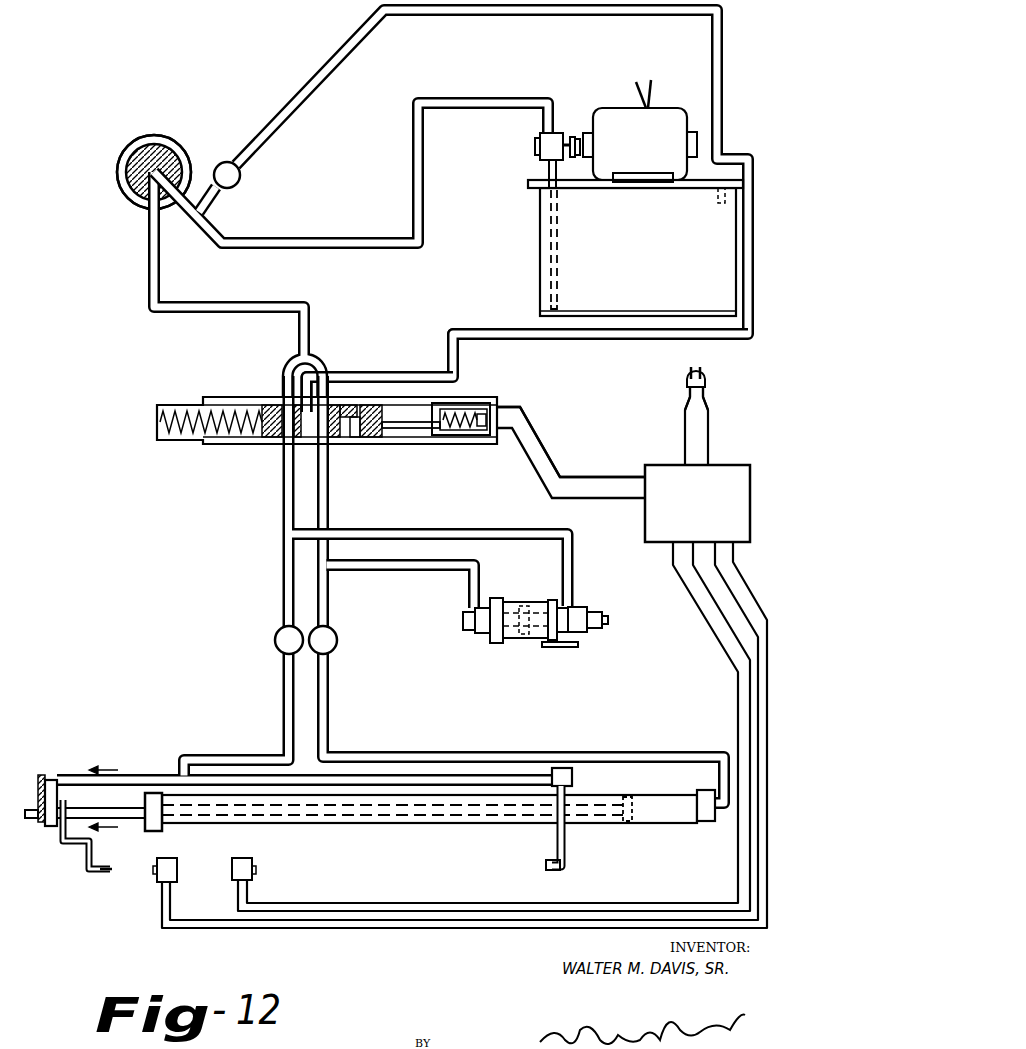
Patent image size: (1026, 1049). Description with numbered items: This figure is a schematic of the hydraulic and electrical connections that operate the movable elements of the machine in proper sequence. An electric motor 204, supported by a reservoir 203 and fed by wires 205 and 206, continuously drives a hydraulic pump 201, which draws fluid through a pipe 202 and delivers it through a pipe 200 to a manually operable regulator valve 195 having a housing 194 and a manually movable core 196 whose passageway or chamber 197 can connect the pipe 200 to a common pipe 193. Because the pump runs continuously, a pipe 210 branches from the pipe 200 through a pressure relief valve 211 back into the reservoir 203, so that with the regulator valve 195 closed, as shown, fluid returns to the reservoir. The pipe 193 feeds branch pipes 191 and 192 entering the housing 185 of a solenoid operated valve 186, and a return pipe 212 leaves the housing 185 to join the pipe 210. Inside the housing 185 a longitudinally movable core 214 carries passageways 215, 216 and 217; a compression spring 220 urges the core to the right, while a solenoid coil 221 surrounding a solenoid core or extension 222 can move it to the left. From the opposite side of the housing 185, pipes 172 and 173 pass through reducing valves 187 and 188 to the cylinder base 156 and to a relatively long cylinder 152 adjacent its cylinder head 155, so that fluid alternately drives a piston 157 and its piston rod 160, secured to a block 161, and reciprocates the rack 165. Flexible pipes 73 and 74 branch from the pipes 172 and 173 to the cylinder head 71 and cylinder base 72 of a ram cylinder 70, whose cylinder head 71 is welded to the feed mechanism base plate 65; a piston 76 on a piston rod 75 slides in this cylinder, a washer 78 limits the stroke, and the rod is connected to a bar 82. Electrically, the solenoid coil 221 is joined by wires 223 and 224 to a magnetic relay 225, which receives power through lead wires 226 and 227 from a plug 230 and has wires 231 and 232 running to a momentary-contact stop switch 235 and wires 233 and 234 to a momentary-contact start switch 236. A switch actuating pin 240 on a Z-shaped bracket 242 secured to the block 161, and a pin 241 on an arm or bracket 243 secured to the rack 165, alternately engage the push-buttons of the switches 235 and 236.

The feed mechanism base plate 65 is at (152, 775).
The hydraulic or pneumatic cylinder 70 is at (520, 640).
The cylinder head 71 is at (552, 600).
The cylinder base 72 is at (498, 645).
The flexible pipe 73 is at (440, 531).
The flexible pipe 74 is at (416, 566).
The piston rod 75 is at (582, 608).
The piston 76 is at (525, 605).
The washer 78 is at (465, 612).
The bar 82 is at (608, 636).
The cylinder 152 is at (410, 824).
The cylinder head 155 is at (158, 830).
The cylinder base 156 is at (703, 822).
The piston 157 is at (627, 824).
The piston rod 160 is at (85, 809).
The block 161 is at (46, 827).
The rack 165 is at (575, 777).
The pipe 172 is at (666, 757).
The pipe 173 is at (212, 745).
The housing 185 is at (375, 445).
The solenoid operated valve 186 is at (231, 393).
The reducing valve 187 is at (338, 640).
The reducing valve 188 is at (275, 642).
The branch pipe 191 is at (328, 372).
The branch pipe 192 is at (284, 370).
The common pipe 193 is at (221, 302).
The housing 194 is at (128, 202).
The regulator valve 195 is at (140, 133).
The manually movable core 196 is at (172, 146).
The passageway 197 is at (147, 200).
The pipe 200 is at (311, 249).
The hydraulic pump 201 is at (538, 143).
The pipe 202 is at (566, 213).
The reservoir 203 is at (540, 266).
The electric motor 204 is at (678, 110).
The wire 205 is at (640, 85).
The wire 206 is at (656, 90).
The pipe 210 is at (292, 115).
The pressure relief valve 211 is at (241, 177).
The return pipe 212 is at (466, 343).
The longitudinally movable core 214 is at (328, 446).
The passageway 215 is at (357, 404).
The passageway 216 is at (317, 438).
The passageway 217 is at (282, 445).
The compression spring 220 is at (216, 445).
The solenoid coil 221 is at (472, 403).
The solenoid core 222 is at (423, 445).
The wire 223 is at (532, 478).
The wire 224 is at (548, 462).
The magnetic relay 225 is at (670, 465).
The lead wire 226 is at (710, 434).
The lead wire 227 is at (688, 418).
The plug 230 is at (687, 380).
The wire 231 is at (740, 542).
The wire 232 is at (219, 918).
The wire 233 is at (508, 910).
The wire 234 is at (384, 903).
The momentary-contact stop switch 235 is at (178, 866).
The momentary-contact start switch 236 is at (250, 858).
The switch actuating element 240 is at (104, 872).
The switch actuating element 241 is at (548, 860).
The Z-shaped bracket 242 is at (73, 858).
The arm 243 is at (566, 840).